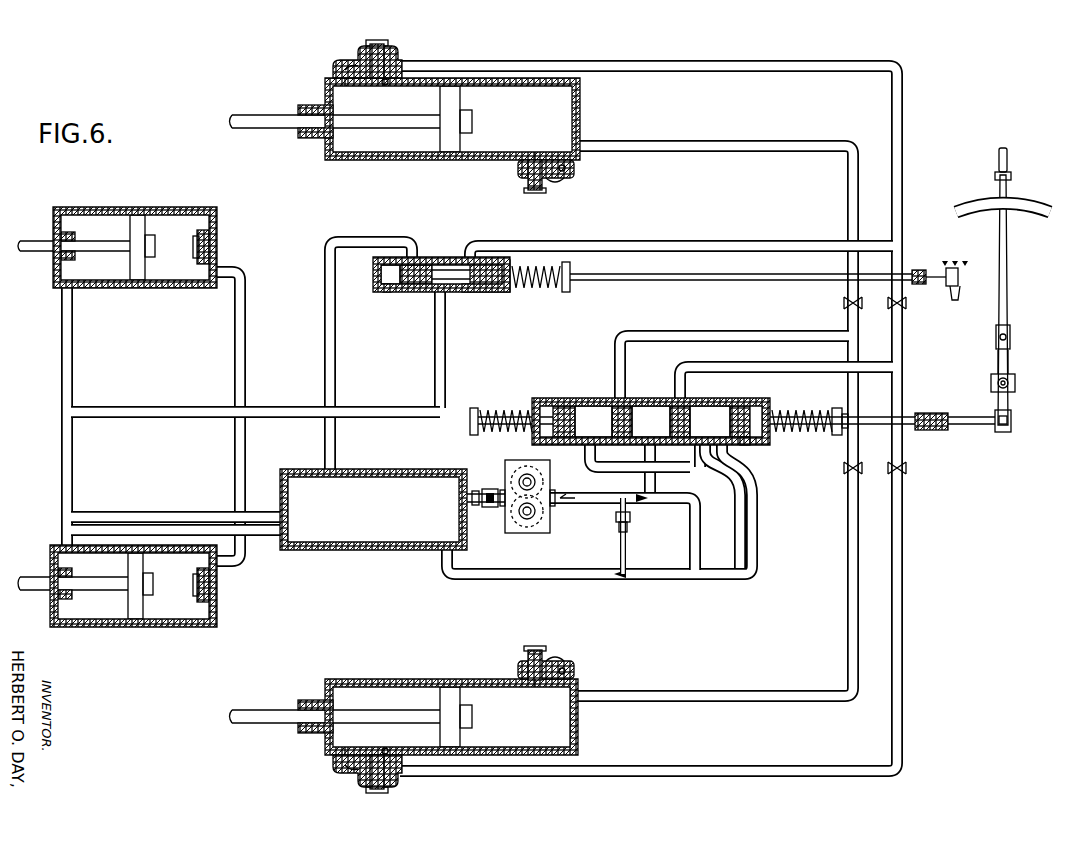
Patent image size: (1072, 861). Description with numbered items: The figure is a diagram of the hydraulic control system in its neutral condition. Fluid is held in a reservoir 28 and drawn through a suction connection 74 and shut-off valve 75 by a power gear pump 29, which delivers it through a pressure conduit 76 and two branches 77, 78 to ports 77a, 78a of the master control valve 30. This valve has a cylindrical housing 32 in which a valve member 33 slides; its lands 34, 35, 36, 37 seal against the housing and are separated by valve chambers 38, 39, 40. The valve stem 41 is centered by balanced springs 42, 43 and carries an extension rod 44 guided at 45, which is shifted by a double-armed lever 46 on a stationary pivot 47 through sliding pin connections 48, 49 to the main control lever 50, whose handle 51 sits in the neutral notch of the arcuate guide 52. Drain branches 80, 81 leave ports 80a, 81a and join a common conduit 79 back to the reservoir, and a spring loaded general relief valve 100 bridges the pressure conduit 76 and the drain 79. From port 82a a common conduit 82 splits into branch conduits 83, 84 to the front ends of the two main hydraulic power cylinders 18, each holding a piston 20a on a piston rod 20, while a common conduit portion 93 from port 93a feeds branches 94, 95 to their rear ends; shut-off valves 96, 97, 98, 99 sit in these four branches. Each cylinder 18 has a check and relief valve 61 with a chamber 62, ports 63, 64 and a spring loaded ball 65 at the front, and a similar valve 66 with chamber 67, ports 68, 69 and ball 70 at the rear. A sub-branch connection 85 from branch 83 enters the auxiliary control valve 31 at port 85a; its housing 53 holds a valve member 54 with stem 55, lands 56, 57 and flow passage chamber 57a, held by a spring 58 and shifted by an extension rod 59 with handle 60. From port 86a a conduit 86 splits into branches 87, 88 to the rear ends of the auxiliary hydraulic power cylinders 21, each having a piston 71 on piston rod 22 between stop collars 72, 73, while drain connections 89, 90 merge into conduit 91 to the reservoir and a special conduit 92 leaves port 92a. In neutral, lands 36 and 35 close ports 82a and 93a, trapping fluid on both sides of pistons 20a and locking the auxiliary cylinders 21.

The main hydraulic power cylinder 18 is at (400, 160).
The piston rod 20 is at (285, 130).
The piston 20a is at (440, 137).
The auxiliary hydraulic power cylinder 21 is at (175, 207).
The piston rod 22 is at (40, 253).
The reservoir 28 is at (345, 550).
The power gear pump 29 is at (548, 534).
The master control valve 30 is at (770, 442).
The auxiliary control valve 31 is at (392, 293).
The cylindrical housing 32 is at (745, 447).
The valve member 33 is at (535, 434).
The land 34 is at (553, 406).
The land 35 is at (618, 406).
The land 36 is at (675, 406).
The land 37 is at (750, 406).
The valve chamber 38 is at (578, 398).
The valve chamber 39 is at (645, 406).
The valve chamber 40 is at (735, 406).
The valve stem 41 is at (800, 410).
The spring 42 is at (505, 405).
The spring 43 is at (836, 436).
The extension rod 44 is at (872, 420).
The guide 45 is at (935, 430).
The double-armed lever 46 is at (1010, 368).
The stationary pivot 47 is at (1012, 388).
The sliding pin connection 48 is at (1012, 430).
The sliding pin connection 49 is at (1011, 332).
The main control lever 50 is at (1006, 285).
The handle 51 is at (1009, 158).
The arcuate guide 52 is at (980, 198).
The cylindrical housing 53 is at (381, 272).
The valve member 54 is at (382, 280).
The stem 55 is at (437, 270).
The land portion 56 is at (490, 262).
The land portion 57 is at (412, 284).
The flow passage chamber 57a is at (470, 292).
The spring 58 is at (555, 284).
The extension rod 59 is at (680, 281).
The handle 60 is at (960, 290).
The check and relief valve 61 is at (360, 58).
The chamber 62 is at (333, 68).
The port 63 is at (346, 87).
The port 64 is at (387, 84).
The spring loaded ball 65 is at (386, 62).
The check and relief valve 66 is at (560, 180).
The chamber 67 is at (568, 162).
The port 68 is at (560, 160).
The port 69 is at (533, 158).
The spring loaded ball 70 is at (520, 175).
The piston 71 is at (138, 215).
The stop collar 72 is at (197, 245).
The stop collar 73 is at (76, 241).
The suction connection 74 is at (472, 503).
The shut-off valve 75 is at (490, 508).
The pressure conduit 76 is at (668, 505).
The branch 77 is at (646, 462).
The port 77a is at (696, 462).
The branch 78 is at (746, 505).
The port 78a is at (742, 475).
The common conduit 79 is at (585, 578).
The branch conduit 80 is at (592, 470).
The port 80a is at (588, 448).
The branch conduit 81 is at (740, 535).
The port 81a is at (733, 495).
The common conduit 82 is at (730, 367).
The port 82a is at (686, 397).
The branch conduit 83 is at (752, 72).
The branch conduit 84 is at (905, 390).
The sub-branch connection 85 is at (684, 241).
The port 85a is at (473, 255).
The conduit 86 is at (436, 350).
The port 86a is at (446, 325).
The branch conduit 87 is at (246, 337).
The branch conduit 88 is at (232, 418).
The drain connection 89 is at (62, 530).
The drain connection 90 is at (73, 398).
The common conduit 91 is at (110, 515).
The special conduit 92 is at (325, 367).
The port 92a is at (416, 255).
The common conduit portion 93 is at (740, 336).
The port 93a is at (622, 396).
The branch conduit 94 is at (848, 186).
The branch conduit 95 is at (850, 605).
The shut-off valve 96 is at (906, 302).
The shut-off valve 97 is at (904, 474).
The shut-off valve 98 is at (844, 303).
The shut-off valve 99 is at (850, 474).
The general relief valve 100 is at (614, 540).